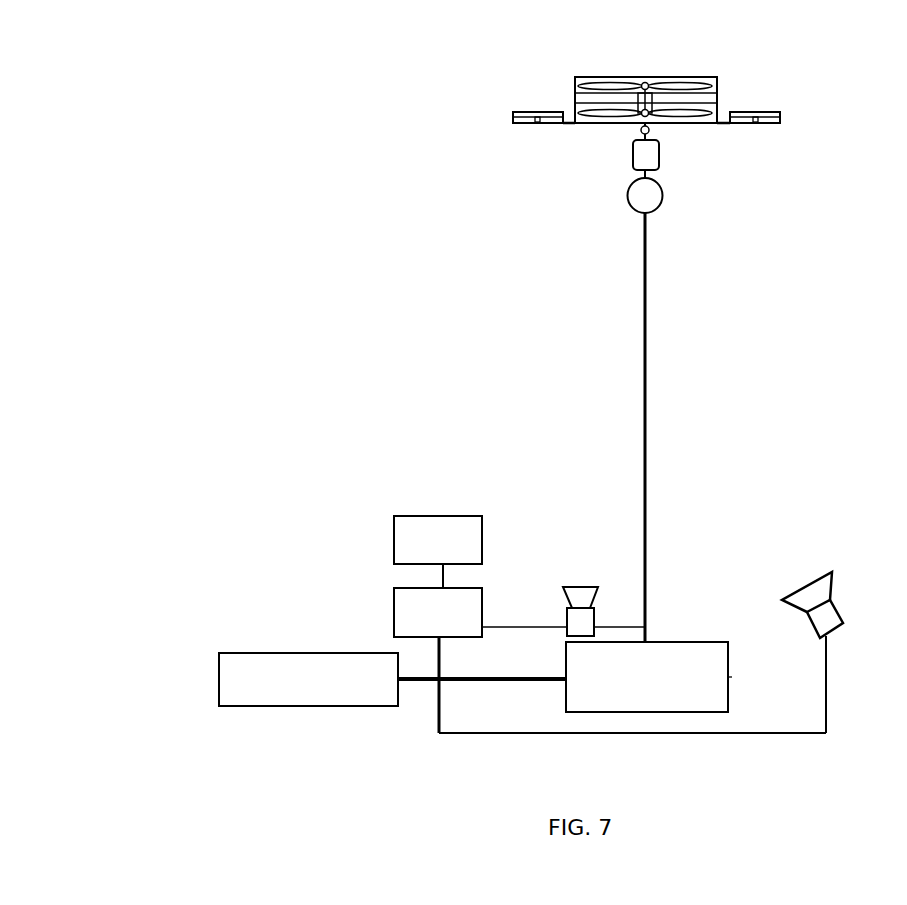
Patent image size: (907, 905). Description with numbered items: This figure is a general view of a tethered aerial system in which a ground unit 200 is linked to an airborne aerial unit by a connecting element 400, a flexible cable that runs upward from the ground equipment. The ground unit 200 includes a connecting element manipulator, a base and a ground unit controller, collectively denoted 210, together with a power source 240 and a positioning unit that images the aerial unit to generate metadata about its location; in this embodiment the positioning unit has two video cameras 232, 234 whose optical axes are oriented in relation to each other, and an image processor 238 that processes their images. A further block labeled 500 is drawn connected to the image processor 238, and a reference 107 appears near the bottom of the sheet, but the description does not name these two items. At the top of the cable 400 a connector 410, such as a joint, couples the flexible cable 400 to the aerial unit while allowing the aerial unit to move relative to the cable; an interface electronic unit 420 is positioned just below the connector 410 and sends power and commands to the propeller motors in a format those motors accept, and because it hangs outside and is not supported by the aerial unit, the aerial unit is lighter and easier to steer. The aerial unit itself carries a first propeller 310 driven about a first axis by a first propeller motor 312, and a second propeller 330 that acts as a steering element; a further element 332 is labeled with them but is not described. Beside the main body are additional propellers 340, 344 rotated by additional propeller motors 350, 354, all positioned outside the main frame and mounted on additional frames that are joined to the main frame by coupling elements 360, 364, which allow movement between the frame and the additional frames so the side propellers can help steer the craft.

The ground surface / site 107 is at (353, 796).
The ground unit 200 is at (509, 624).
The ground unit controller assembly 210 is at (634, 686).
The video camera 232 is at (590, 585).
The video camera 234 is at (833, 600).
The image processor 238 is at (421, 623).
The power source 240 is at (295, 683).
The first propeller 310 is at (615, 65).
The first propeller motor 312 is at (646, 101).
The second propeller 330 is at (645, 86).
The lower rotor 332 is at (645, 113).
The additional propeller 340 is at (491, 91).
The additional propeller 344 is at (807, 91).
The additional propeller motor 350 is at (538, 119).
The additional propeller motor 354 is at (755, 119).
The coupling element 360 is at (567, 126).
The coupling element 364 is at (720, 121).
The connecting element 400 is at (640, 362).
The connector 410 is at (665, 202).
The interface electronic unit 420 is at (662, 153).
The remote control unit 500 is at (421, 551).